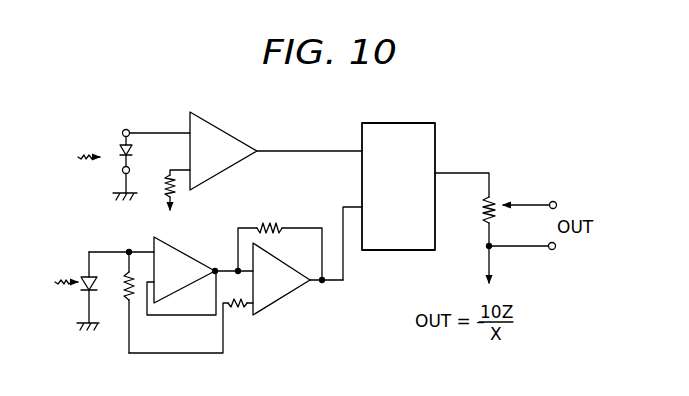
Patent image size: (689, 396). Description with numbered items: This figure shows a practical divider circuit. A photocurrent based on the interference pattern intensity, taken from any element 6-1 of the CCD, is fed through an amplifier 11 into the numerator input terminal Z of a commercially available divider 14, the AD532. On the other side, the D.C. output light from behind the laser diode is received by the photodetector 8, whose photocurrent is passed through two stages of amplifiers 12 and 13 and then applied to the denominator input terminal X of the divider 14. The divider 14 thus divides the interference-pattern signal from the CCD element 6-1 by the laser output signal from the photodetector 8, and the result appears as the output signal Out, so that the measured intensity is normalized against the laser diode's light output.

The element of the CCD 6-1 is at (121, 133).
The photodetector 8 is at (95, 283).
The amplifier 11 is at (227, 132).
The amplifier 12 is at (180, 248).
The amplifier 13 is at (288, 295).
The divider 14 is at (437, 145).